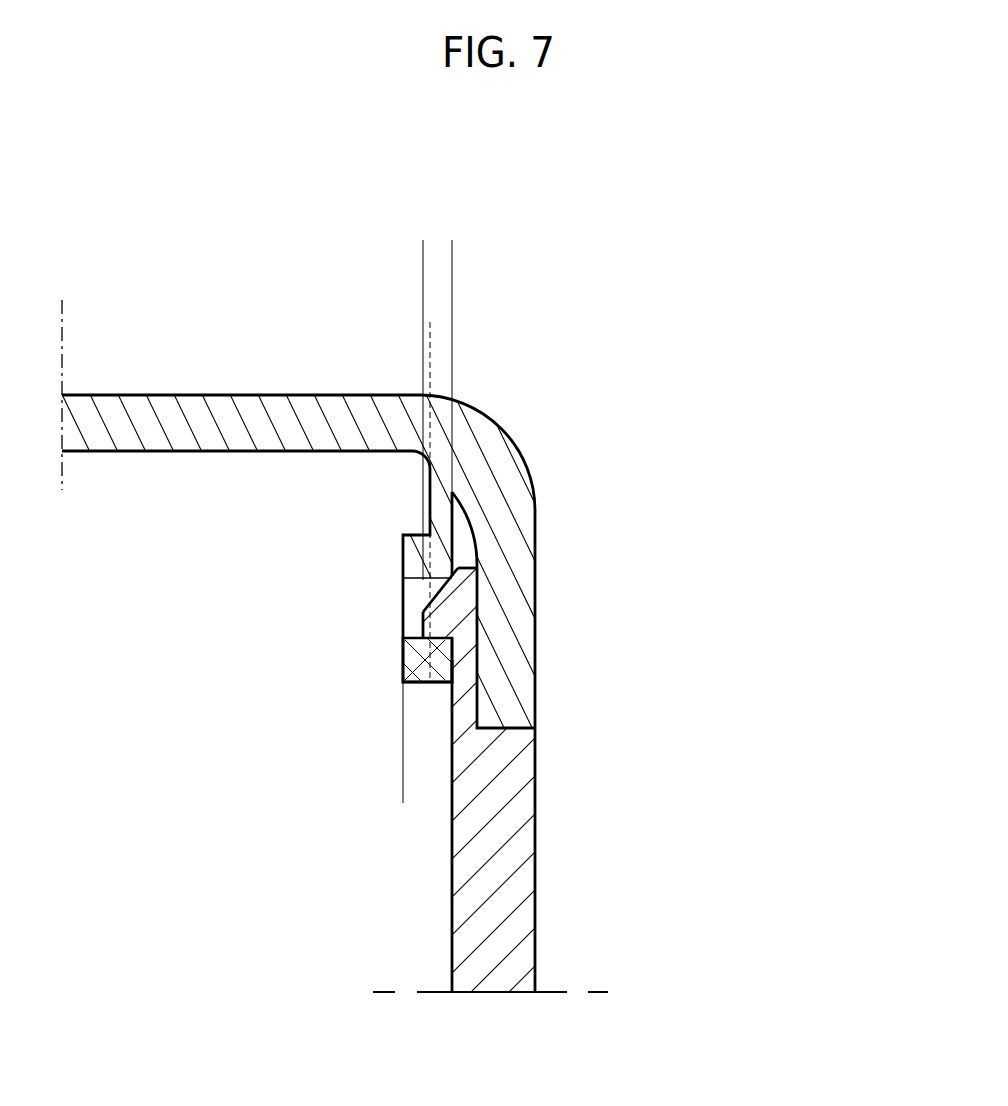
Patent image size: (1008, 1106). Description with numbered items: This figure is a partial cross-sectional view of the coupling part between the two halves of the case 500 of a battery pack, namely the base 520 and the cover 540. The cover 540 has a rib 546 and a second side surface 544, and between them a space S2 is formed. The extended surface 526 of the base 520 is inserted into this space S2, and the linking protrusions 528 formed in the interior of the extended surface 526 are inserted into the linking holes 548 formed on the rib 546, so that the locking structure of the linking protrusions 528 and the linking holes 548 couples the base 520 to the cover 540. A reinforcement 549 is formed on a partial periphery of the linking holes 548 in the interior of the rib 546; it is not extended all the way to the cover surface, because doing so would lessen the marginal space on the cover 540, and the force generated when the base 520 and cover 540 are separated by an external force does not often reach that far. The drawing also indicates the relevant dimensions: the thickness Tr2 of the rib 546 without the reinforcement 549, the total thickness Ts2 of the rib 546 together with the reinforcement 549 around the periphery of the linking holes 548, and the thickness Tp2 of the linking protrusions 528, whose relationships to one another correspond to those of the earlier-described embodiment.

The case 500 is at (795, 488).
The base 520 is at (608, 798).
The extended surface 526 is at (465, 690).
The linking protrusions 528 is at (427, 627).
The cover 540 is at (608, 522).
The second side surface 544 is at (527, 625).
The rib 546 is at (435, 512).
The linking holes 548 is at (435, 590).
The reinforcement 549 is at (410, 662).
The space S2 is at (461, 550).
The thickness of the linking protrusions Tp2 is at (503, 245).
The thickness of the rib without the reinforcement Tr2 is at (430, 334).
The total thickness of the rib and the reinforcement Ts2 is at (490, 792).